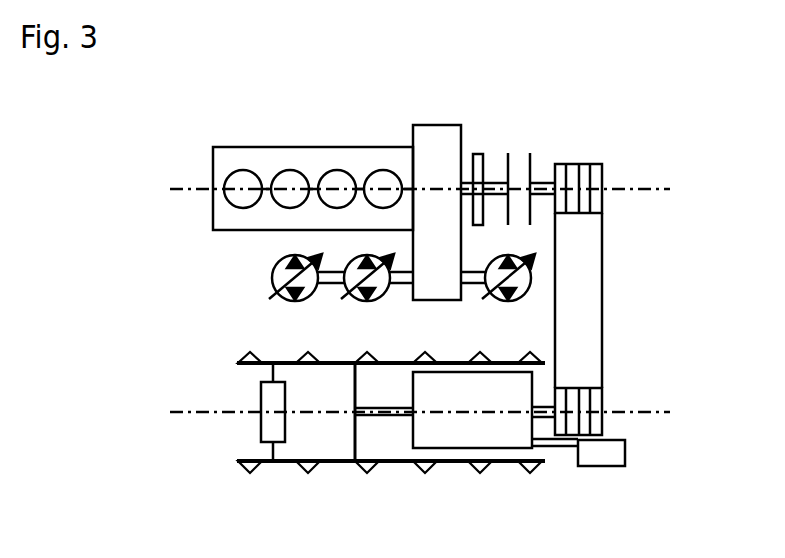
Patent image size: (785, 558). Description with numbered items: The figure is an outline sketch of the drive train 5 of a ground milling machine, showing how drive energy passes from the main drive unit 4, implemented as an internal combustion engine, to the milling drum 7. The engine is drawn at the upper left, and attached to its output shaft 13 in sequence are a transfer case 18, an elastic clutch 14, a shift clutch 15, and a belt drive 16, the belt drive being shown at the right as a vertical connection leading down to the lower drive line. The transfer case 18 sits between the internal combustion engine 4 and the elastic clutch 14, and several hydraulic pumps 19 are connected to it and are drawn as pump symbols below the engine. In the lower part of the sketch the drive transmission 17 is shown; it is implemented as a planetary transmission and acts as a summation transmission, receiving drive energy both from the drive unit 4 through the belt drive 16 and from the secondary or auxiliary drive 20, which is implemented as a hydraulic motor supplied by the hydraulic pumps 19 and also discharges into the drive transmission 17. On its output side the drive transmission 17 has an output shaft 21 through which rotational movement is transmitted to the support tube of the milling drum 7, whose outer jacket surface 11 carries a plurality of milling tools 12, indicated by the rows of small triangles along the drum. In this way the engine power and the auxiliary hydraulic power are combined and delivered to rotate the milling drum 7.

The main drive unit 4 is at (227, 160).
The drive train 5 is at (663, 56).
The milling drum 7 is at (282, 467).
The outer jacket surface 11 is at (343, 467).
The milling tools 12 is at (307, 360).
The output shaft 13 is at (463, 180).
The elastic clutch 14 is at (476, 172).
The shift clutch 15 is at (518, 182).
The belt drive 16 is at (590, 195).
The drive transmission 17 is at (508, 428).
The transfer case 18 is at (425, 135).
The hydraulic pumps 19 is at (283, 277).
The auxiliary drive 20 is at (613, 453).
The output shaft 21 is at (392, 407).